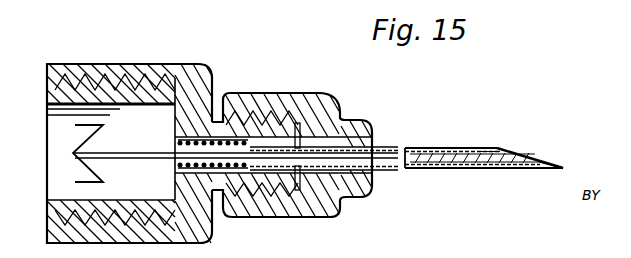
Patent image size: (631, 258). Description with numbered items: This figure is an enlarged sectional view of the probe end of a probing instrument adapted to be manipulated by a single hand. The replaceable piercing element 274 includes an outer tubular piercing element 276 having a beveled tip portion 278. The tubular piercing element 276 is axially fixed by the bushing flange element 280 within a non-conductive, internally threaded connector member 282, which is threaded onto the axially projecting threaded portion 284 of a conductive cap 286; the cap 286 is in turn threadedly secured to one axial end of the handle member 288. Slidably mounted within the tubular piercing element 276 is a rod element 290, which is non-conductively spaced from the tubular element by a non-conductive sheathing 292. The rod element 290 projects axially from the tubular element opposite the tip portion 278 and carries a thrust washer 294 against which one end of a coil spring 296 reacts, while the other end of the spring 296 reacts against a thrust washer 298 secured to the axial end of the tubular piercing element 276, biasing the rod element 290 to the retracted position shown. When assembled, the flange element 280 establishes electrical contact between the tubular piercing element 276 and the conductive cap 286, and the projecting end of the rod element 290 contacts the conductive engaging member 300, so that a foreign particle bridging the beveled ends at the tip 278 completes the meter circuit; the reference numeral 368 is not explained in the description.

The replaceable piercing element 274 is at (463, 169).
The outer tubular piercing element 276 is at (412, 145).
The beveled tip portion 278 is at (540, 162).
The bushing flange element 280 is at (340, 112).
The connector member 282 is at (293, 100).
The threaded portion 284 is at (258, 215).
The conductive cap 286 is at (140, 70).
The handle member 288 is at (90, 92).
The rod element 290 is at (480, 148).
The non-conductive sheathing 292 is at (448, 148).
The thrust washer 294 is at (117, 141).
The coil spring 296 is at (147, 162).
The thrust washer 298 is at (251, 140).
The conductive engaging member 300 is at (58, 133).
The bevel 368 is at (538, 158).